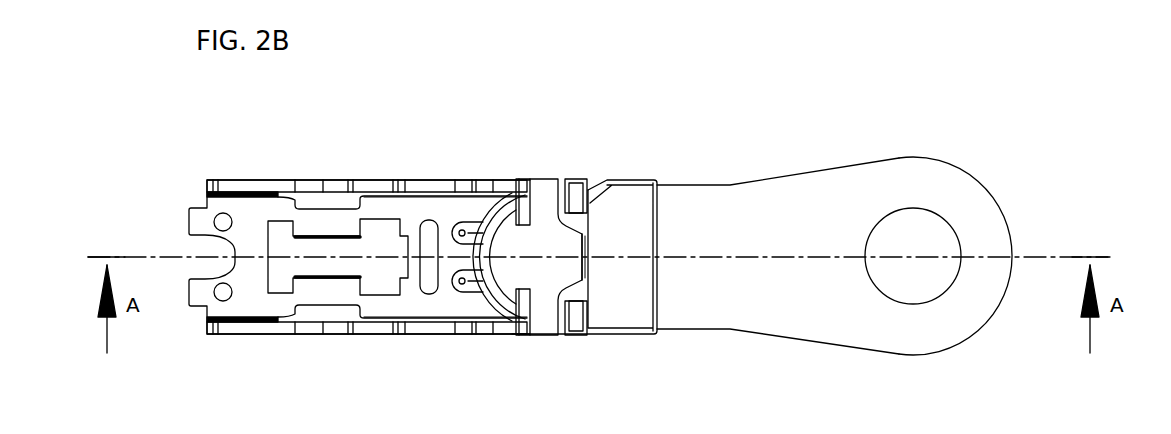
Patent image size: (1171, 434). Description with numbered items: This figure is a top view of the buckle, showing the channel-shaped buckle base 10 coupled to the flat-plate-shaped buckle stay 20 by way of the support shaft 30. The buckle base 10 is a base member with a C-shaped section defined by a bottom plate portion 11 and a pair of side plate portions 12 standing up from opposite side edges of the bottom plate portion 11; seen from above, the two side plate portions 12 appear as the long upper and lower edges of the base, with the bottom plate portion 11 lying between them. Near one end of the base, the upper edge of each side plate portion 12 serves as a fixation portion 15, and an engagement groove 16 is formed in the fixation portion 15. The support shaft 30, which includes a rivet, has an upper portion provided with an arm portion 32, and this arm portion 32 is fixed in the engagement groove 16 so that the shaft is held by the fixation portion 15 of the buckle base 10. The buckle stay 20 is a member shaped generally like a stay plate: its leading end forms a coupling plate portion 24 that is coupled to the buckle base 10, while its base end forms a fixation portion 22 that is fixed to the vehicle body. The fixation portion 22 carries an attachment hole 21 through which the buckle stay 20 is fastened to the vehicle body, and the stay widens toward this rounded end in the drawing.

The buckle base 10 is at (233, 180).
The bottom plate portion 11 is at (318, 224).
The side plate portions 12 is at (268, 186).
The fixation portion 15 is at (508, 185).
The engagement groove 16 is at (545, 195).
The buckle stay 20 is at (800, 174).
The attachment hole 21 is at (912, 210).
The fixation portion 22 is at (918, 331).
The coupling plate portion 24 is at (620, 303).
The support shaft 30 is at (585, 235).
The arm portion 32 is at (567, 193).